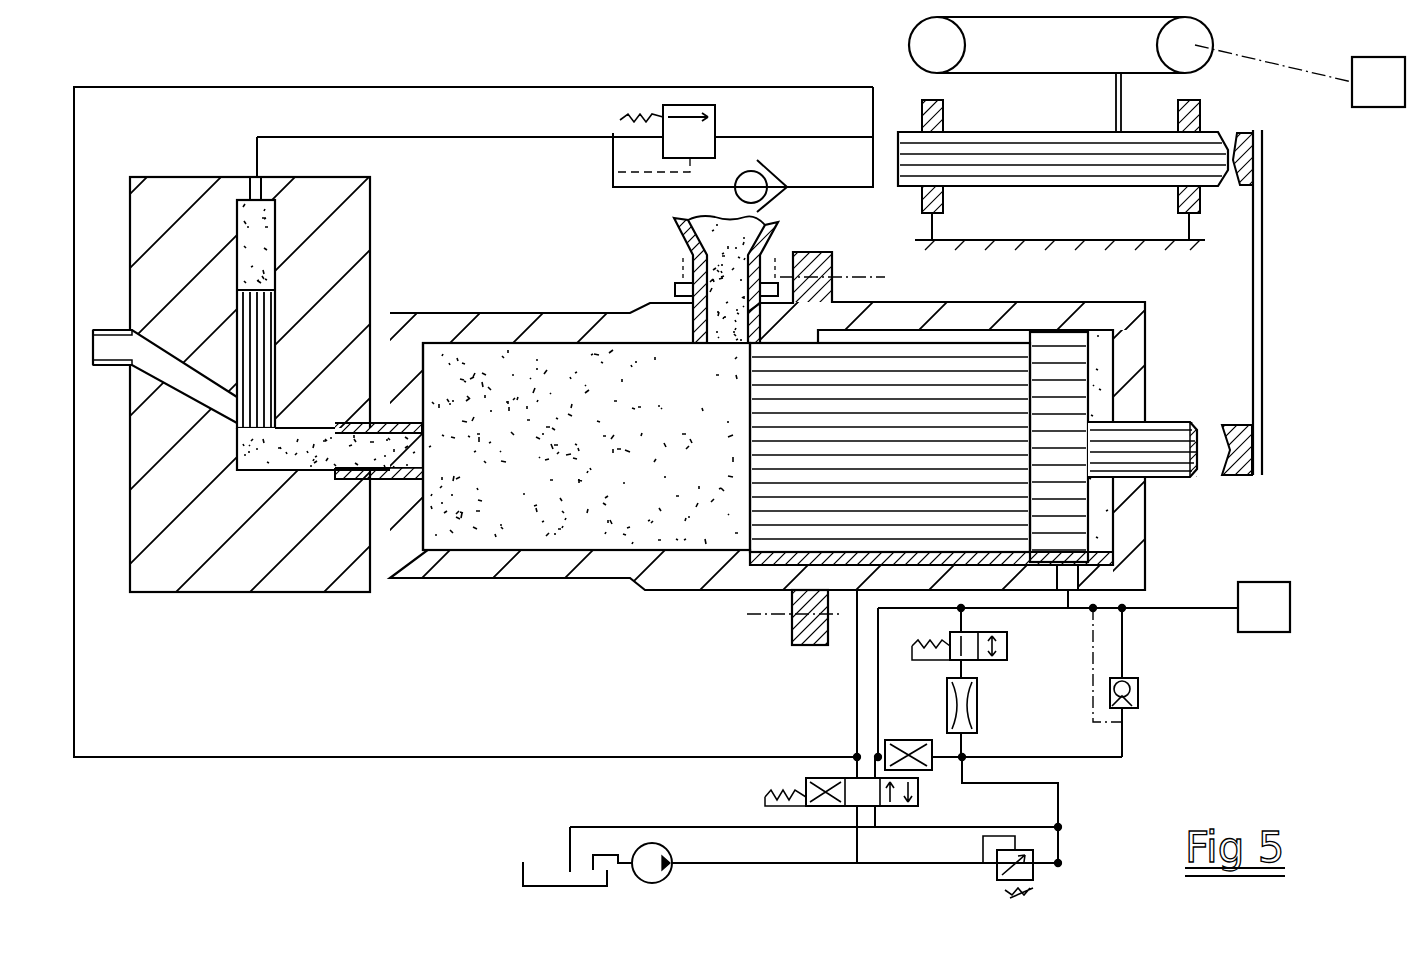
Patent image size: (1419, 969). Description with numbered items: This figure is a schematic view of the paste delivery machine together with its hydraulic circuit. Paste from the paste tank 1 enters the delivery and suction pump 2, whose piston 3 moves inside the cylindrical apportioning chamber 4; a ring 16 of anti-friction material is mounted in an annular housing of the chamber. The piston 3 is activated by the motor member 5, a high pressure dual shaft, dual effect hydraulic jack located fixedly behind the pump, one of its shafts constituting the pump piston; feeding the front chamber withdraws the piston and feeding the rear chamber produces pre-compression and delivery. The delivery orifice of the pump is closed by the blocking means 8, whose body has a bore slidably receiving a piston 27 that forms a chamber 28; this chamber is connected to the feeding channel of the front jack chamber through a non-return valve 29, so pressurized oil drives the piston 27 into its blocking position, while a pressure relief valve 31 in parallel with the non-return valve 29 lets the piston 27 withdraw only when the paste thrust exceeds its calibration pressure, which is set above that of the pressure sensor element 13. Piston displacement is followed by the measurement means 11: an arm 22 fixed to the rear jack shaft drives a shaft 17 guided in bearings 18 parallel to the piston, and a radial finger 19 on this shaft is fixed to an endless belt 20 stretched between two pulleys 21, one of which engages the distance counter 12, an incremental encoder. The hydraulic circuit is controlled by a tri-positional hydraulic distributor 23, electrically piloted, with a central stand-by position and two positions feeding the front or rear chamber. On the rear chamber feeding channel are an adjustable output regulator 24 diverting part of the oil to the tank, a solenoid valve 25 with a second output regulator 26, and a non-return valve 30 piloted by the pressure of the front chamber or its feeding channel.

The paste tank 1 is at (681, 236).
The delivery and suction pump 2 is at (548, 313).
The piston 3 is at (960, 365).
The apportioning chamber 4 is at (560, 550).
The motor member 5 is at (1145, 325).
The blocking means 8 is at (372, 200).
The measurement means 11 is at (1289, 154).
The distance counter 12 is at (1365, 80).
The pressure sensor element 13 is at (1266, 605).
The ring 16 is at (662, 578).
The shaft 17 is at (1030, 142).
The bearings 18 is at (943, 118).
The radial finger 19 is at (1122, 118).
The endless belt 20 is at (1115, 20).
The pulleys 21 is at (932, 47).
The arm 22 is at (1263, 300).
The tri-positional hydraulic distributor 23 is at (920, 796).
The output regulator 24 is at (925, 722).
The solenoid valve 25 is at (1008, 645).
The second output regulator 26 is at (978, 707).
The piston 27 is at (268, 336).
The chamber 28 is at (252, 228).
The non-return valve 29 is at (789, 192).
The non-return valve 30 is at (1140, 700).
The pressure relief valve 31 is at (718, 105).